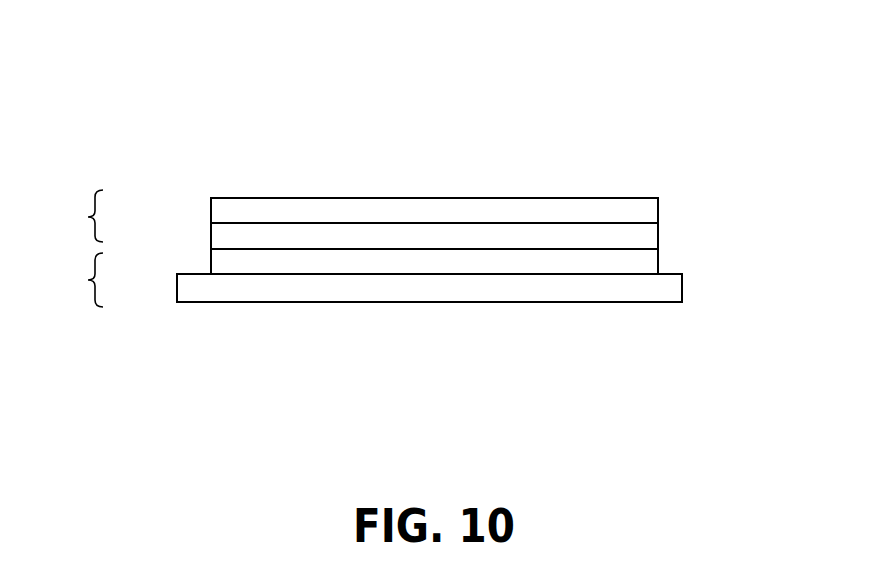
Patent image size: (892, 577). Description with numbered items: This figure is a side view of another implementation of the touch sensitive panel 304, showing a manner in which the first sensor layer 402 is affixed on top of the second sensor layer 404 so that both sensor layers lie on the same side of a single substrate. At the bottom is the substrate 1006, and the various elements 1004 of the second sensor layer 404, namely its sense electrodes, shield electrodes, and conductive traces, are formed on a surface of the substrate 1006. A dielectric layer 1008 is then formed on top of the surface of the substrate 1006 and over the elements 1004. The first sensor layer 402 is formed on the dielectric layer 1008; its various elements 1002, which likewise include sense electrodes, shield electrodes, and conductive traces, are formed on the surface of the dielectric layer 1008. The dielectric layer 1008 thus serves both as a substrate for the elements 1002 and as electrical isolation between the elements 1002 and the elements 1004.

The touch sensitive panel 304 is at (707, 90).
The first sensor layer 402 is at (66, 280).
The second sensor layer 404 is at (66, 216).
The elements of first sensor layer 1002 is at (658, 210).
The elements of second sensor layer 1004 is at (658, 259).
The substrate 1006 is at (682, 292).
The dielectric layer 1008 is at (211, 239).